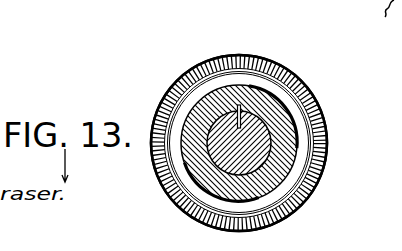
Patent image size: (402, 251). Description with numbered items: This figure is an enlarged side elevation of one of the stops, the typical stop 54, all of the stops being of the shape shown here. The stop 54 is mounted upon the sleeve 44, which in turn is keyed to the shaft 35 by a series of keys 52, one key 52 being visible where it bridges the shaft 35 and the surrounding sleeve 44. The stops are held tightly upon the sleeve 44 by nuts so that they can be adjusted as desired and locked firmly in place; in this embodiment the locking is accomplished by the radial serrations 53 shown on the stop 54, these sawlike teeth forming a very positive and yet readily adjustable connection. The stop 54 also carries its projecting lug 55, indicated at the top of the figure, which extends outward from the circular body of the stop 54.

The shaft 35 is at (212, 135).
The sleeve 44 is at (284, 114).
The key 52 is at (232, 111).
The radial serrations 53 is at (289, 86).
The stop 54 is at (311, 138).
The projecting lug 55 is at (239, 55).